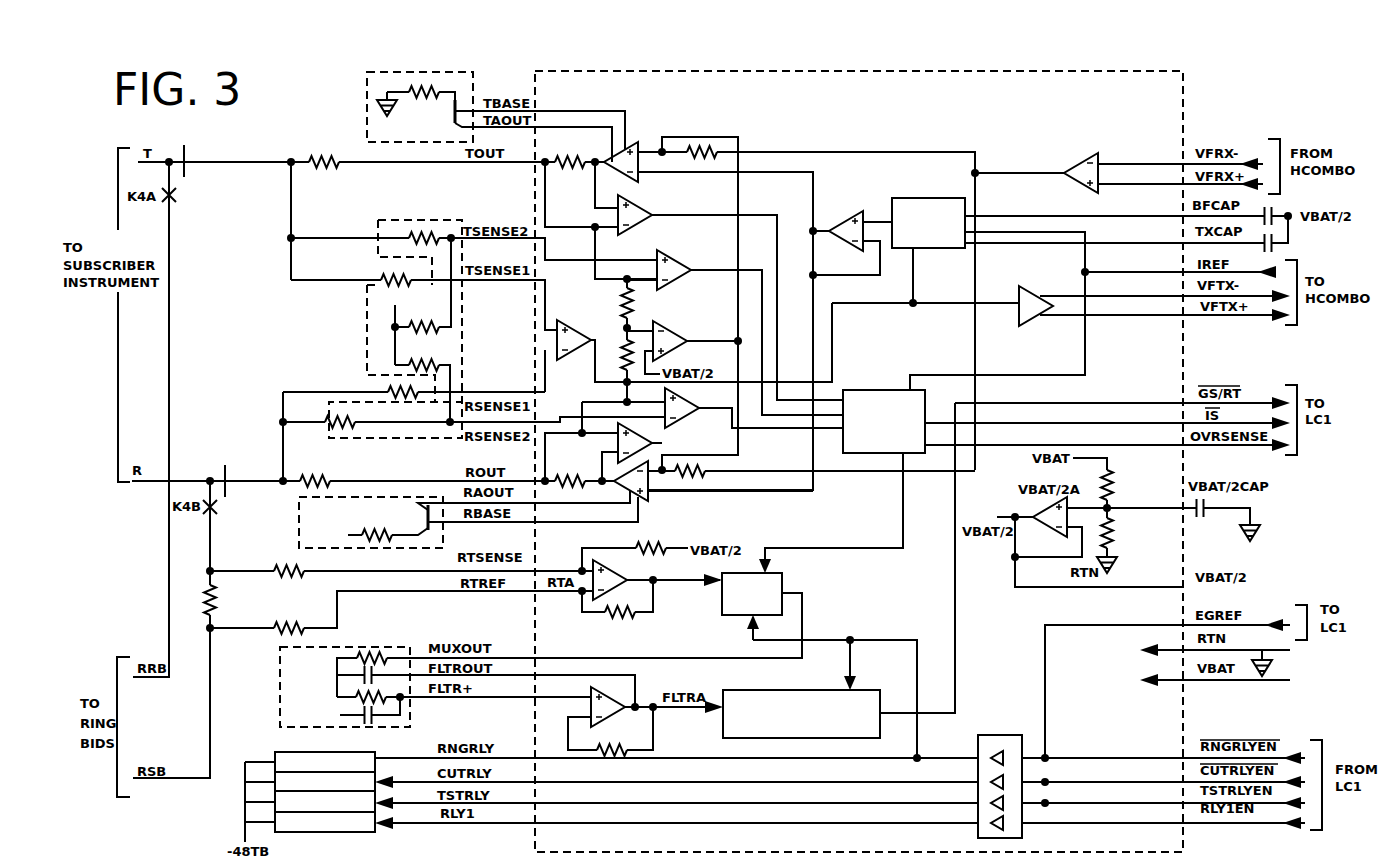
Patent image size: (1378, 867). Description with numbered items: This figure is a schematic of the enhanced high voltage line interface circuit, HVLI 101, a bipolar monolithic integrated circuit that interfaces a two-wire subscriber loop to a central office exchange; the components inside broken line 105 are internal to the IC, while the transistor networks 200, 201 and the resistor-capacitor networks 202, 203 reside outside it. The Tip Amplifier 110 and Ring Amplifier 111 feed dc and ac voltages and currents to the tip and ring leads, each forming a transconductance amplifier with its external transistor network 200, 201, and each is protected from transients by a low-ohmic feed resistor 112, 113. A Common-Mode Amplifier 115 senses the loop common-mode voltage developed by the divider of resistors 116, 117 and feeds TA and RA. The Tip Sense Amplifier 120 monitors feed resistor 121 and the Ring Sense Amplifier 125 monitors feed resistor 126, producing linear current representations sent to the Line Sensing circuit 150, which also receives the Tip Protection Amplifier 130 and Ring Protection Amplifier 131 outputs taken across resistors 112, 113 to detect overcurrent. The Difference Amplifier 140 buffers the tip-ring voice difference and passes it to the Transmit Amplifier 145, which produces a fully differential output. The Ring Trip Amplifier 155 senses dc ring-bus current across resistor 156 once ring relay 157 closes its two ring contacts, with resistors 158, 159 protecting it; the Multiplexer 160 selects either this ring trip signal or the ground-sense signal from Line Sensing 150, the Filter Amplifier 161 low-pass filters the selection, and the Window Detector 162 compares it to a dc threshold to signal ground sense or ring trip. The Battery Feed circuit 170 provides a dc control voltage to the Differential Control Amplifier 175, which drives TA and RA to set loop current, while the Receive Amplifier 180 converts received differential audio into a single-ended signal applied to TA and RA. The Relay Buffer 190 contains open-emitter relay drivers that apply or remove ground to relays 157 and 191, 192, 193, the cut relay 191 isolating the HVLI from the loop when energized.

The HVLI circuit 101 is at (705, 62).
The broken line 105 is at (590, 72).
The Tip Amplifier (TA) circuit 110 is at (628, 146).
The Ring Amplifier (RA) circuit 111 is at (642, 500).
The resistor 112 is at (315, 160).
The resistor 113 is at (331, 472).
The Common-Mode Amplifier (CMA) circuit 115 is at (684, 357).
The resistor 116 is at (620, 308).
The resistor 117 is at (627, 348).
The Tip Sense Amplifier (TSA) circuit 120 is at (636, 206).
The feed resistor 121 is at (572, 156).
The Ring Sense Amplifier (RSA) circuit 125 is at (655, 446).
The feed resistor 126 is at (563, 473).
The Tip Protection Amplifier (TPA) 130 is at (667, 256).
The Ring Protection Amplifier (RPA) 131 is at (690, 420).
The Difference Amplifier (DA) 140 is at (594, 362).
The Transmit Amplifier (TXA) 145 is at (1024, 328).
The Line Sensing circuit 150 is at (866, 393).
The Ring Trip Amplifier (RTA) 155 is at (624, 573).
The resistor 156 is at (216, 606).
The ring relay 157 is at (280, 752).
The resistor 158 is at (282, 566).
The resistor 159 is at (289, 616).
The Multiplexer (MUX) circuit 160 is at (722, 610).
The Filter Amplifier (FLTRA) 161 is at (610, 720).
The Window Detector circuit 162 is at (795, 738).
The Battery Feed circuit 170 is at (902, 198).
The Differential Control Amplifier (DCA) 175 is at (852, 252).
The Receive Amplifier (RXA) circuit 180 is at (1074, 160).
The Relay Buffer (RLYBUFFER) 190 is at (978, 835).
The cut relay 191 is at (275, 781).
The relay 192 is at (275, 800).
The relay 193 is at (325, 832).
The transistor network 200 is at (416, 73).
The transistor network 201 is at (297, 522).
The resistor capacitor network 202 is at (279, 700).
The resistor capacitor network 203 is at (364, 342).